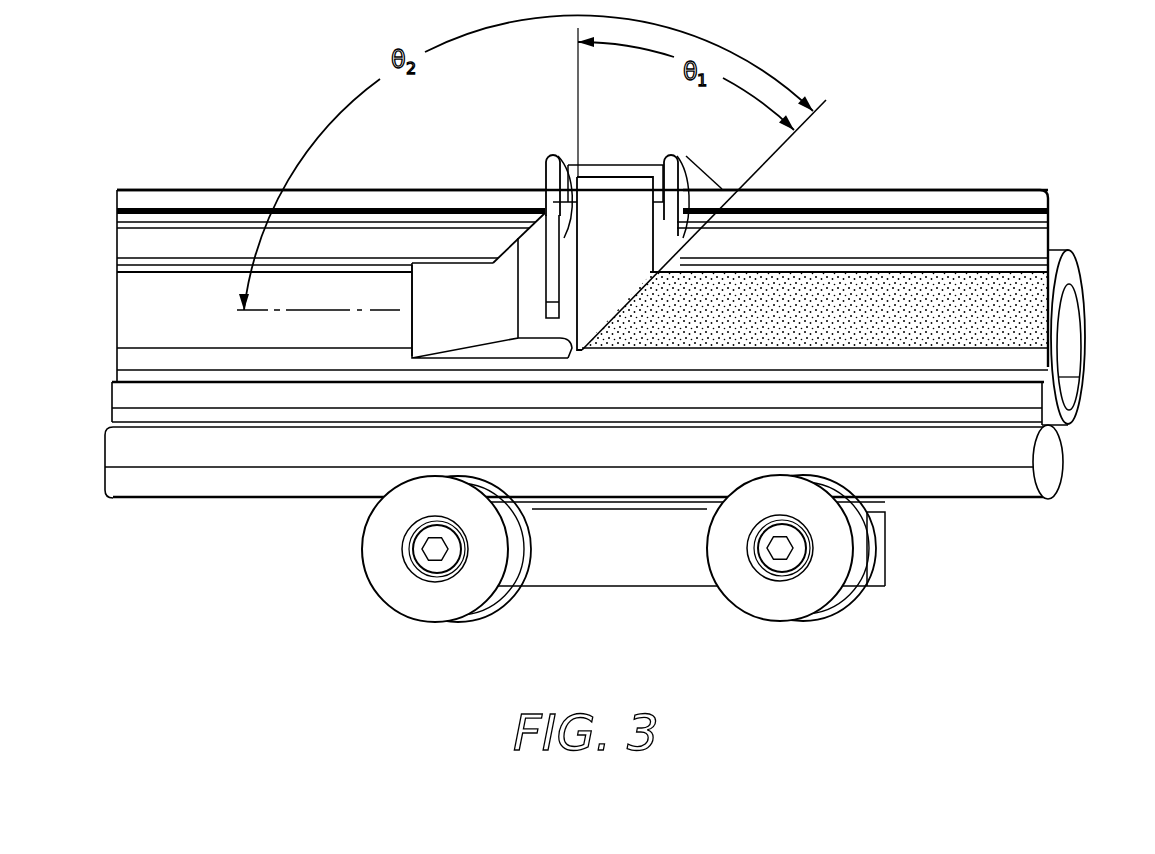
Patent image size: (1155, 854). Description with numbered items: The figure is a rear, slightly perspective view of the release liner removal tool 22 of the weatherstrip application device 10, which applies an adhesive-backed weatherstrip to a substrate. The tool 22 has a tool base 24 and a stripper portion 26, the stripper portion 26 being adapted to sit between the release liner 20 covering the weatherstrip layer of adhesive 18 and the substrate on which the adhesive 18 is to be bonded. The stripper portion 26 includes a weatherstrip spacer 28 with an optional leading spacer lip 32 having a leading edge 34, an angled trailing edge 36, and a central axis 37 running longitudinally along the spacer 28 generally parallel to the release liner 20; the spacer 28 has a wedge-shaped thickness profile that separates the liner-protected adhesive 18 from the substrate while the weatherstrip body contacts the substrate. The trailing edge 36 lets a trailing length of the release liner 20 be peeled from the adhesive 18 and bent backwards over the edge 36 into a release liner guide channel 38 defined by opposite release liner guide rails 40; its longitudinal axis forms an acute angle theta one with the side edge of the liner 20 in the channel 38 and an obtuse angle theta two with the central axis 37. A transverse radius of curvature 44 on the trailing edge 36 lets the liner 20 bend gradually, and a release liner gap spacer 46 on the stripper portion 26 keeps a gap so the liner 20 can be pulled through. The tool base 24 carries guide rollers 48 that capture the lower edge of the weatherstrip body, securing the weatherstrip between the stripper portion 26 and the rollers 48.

The weatherstrip application device 10 is at (340, 636).
The layer of adhesive 18 is at (1018, 297).
The release liner 20 is at (184, 320).
The release liner removal tool 22 is at (888, 567).
The tool base 24 is at (655, 588).
The stripper portion 26 is at (631, 148).
The weatherstrip spacer 28 is at (484, 244).
The leading spacer lip 32 is at (476, 321).
The leading edge 34 is at (412, 325).
The angled trailing edge 36 is at (678, 252).
The central axis 37 is at (320, 312).
The release liner guide channel 38 is at (596, 152).
The release liner guide rails 40 is at (557, 152).
The transverse radius of curvature 44 is at (558, 368).
The release liner gap spacer 46 is at (547, 222).
The guide rollers 48 is at (422, 623).